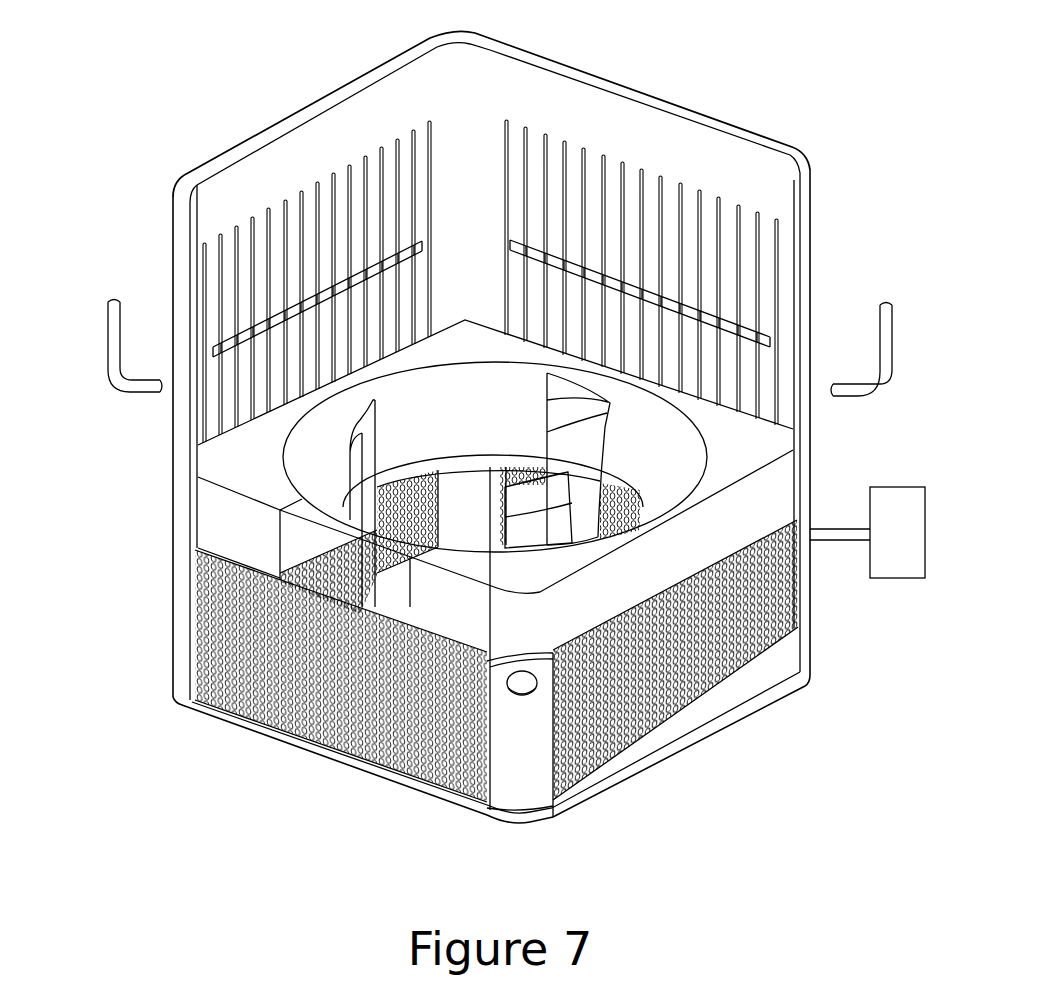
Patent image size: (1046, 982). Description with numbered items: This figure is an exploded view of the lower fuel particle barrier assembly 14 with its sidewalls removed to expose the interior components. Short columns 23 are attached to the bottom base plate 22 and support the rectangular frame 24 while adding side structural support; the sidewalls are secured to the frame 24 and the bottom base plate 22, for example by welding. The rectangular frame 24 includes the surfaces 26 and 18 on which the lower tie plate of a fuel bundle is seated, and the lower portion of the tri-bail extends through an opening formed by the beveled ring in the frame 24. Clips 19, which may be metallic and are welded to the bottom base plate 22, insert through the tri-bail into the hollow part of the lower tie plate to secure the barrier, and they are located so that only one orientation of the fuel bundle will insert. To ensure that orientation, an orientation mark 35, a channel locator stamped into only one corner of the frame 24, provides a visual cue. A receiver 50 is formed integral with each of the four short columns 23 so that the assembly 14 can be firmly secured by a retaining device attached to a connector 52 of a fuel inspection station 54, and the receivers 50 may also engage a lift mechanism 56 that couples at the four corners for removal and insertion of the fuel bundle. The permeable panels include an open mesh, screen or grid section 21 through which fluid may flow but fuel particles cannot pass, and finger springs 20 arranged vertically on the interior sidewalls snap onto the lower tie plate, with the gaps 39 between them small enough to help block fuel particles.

The lower fuel particle barrier assembly 14 is at (176, 63).
The gaps 39 is at (264, 205).
The orientation mark 35 is at (500, 330).
The clips 19 is at (582, 399).
The lift mechanism 56 is at (104, 331).
The surface 18 is at (670, 465).
The finger springs 20 is at (214, 363).
The connector 52 is at (833, 519).
The surface 26 is at (250, 456).
The receiver 50 is at (178, 557).
The rectangular frame 24 is at (230, 529).
The fuel inspection station 54 is at (896, 584).
The bottom base plate 22 is at (390, 591).
The short columns 23 is at (478, 503).
The open mesh, screen or grid section 21 is at (310, 685).